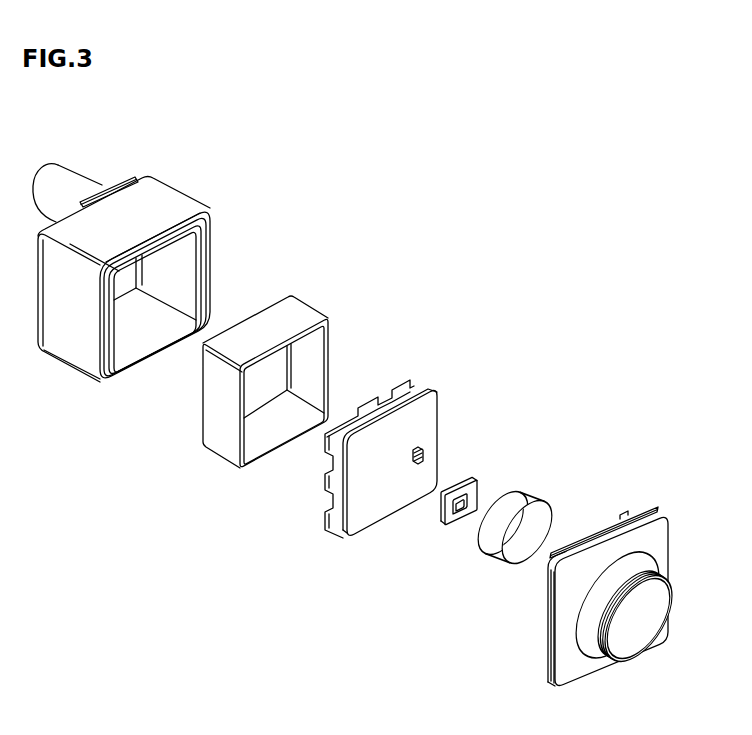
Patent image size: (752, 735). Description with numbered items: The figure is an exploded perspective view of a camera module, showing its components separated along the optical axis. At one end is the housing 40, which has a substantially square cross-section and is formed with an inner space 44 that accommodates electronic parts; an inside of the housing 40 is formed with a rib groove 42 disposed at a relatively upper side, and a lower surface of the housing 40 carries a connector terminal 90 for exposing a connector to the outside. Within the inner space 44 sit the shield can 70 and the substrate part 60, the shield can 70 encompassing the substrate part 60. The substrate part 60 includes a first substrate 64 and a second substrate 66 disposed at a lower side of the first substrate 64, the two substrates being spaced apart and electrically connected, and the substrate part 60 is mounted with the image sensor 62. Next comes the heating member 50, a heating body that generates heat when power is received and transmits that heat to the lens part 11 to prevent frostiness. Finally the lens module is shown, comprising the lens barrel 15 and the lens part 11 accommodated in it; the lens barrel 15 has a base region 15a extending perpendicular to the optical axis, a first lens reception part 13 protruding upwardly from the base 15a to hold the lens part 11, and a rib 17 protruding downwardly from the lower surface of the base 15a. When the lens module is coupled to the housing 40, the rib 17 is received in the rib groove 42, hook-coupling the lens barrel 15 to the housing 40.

The lens part 11 is at (648, 632).
The first lens reception part 13 is at (638, 562).
The lens barrel 15 is at (661, 512).
The base region 15a is at (570, 640).
The rib 17 is at (613, 527).
The housing 40 is at (140, 190).
The rib groove 42 is at (207, 258).
The inner space 44 is at (146, 322).
The heating member 50 is at (522, 498).
The substrate part 60 is at (438, 303).
The image sensor 62 is at (468, 480).
The first substrate 64 is at (436, 392).
The second substrate 66 is at (415, 384).
The shield can 70 is at (298, 298).
The connector terminal 90 is at (67, 168).